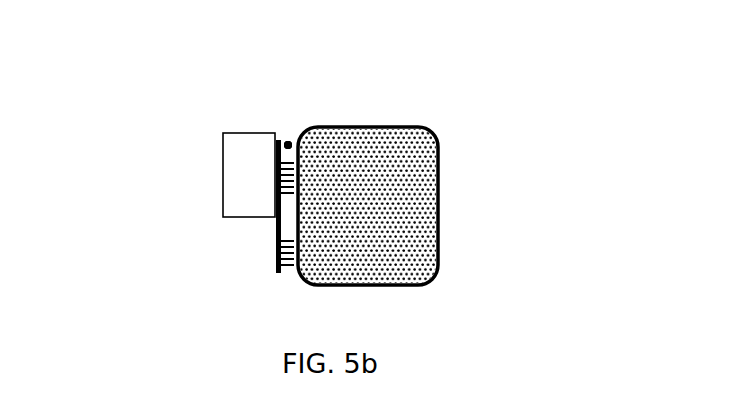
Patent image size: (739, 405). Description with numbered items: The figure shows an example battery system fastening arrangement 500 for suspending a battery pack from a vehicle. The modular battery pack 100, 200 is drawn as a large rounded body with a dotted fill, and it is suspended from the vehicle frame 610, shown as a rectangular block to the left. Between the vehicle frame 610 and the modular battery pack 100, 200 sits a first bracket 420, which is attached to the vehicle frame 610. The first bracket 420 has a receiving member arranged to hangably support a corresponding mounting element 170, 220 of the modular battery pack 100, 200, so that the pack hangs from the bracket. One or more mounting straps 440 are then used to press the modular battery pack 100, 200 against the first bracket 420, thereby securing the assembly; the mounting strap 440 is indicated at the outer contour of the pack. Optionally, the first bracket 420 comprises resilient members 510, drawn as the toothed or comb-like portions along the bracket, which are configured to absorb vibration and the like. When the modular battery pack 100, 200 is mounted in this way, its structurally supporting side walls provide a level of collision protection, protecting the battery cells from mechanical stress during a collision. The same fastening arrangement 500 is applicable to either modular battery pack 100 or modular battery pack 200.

The battery system fastening arrangement 500 is at (141, 66).
The first bracket 420 is at (288, 138).
The mounting element 170 is at (291, 140).
The mounting element 220 is at (362, 102).
The mounting strap 440 is at (423, 124).
The modular battery pack 100 is at (420, 198).
The modular battery pack 200 is at (451, 206).
The vehicle frame 610 is at (223, 190).
The resilient member 510 is at (289, 276).